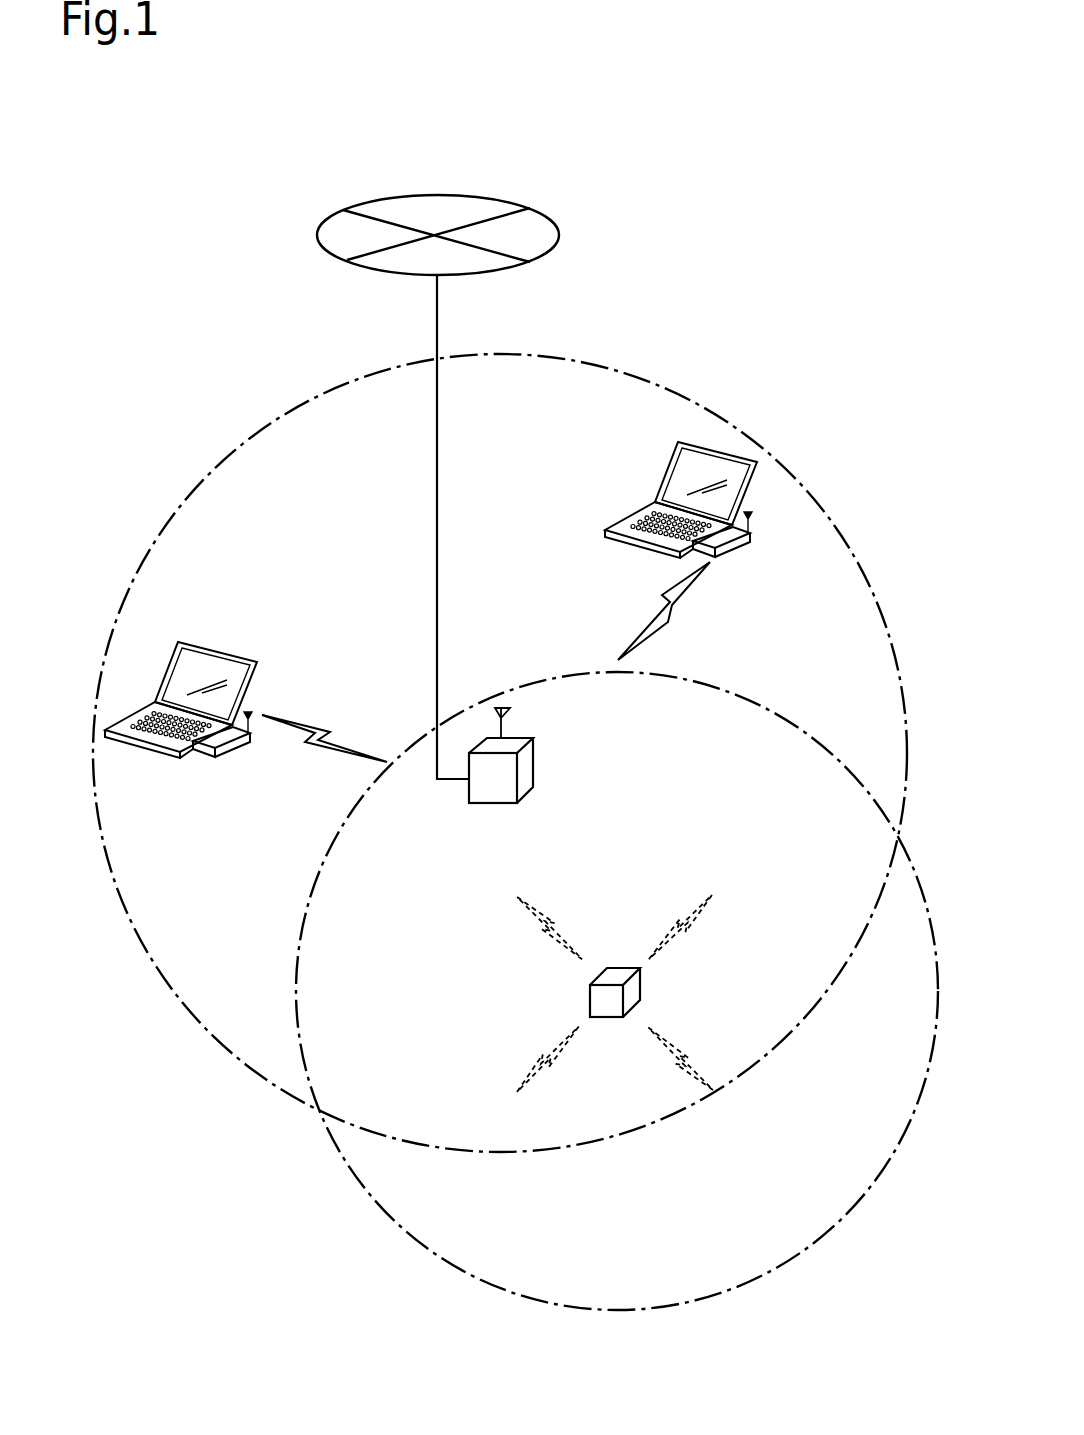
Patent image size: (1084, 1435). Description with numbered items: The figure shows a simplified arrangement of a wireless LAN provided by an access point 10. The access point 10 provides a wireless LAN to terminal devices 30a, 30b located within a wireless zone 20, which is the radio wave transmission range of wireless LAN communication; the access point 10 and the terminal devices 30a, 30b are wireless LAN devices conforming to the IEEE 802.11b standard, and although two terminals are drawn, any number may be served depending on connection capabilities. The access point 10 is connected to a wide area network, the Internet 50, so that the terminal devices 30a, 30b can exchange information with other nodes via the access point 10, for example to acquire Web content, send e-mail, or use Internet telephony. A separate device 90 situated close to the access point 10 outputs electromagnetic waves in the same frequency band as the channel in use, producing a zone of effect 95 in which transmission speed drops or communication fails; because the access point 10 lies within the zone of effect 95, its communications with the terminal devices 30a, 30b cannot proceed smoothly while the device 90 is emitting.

The access point 10 is at (535, 761).
The wireless zone 20 is at (602, 370).
The terminal device 30a is at (253, 695).
The terminal device 30b is at (662, 468).
The Internet 50 is at (517, 203).
The device 90 is at (642, 982).
The zone of effect 95 is at (868, 1193).